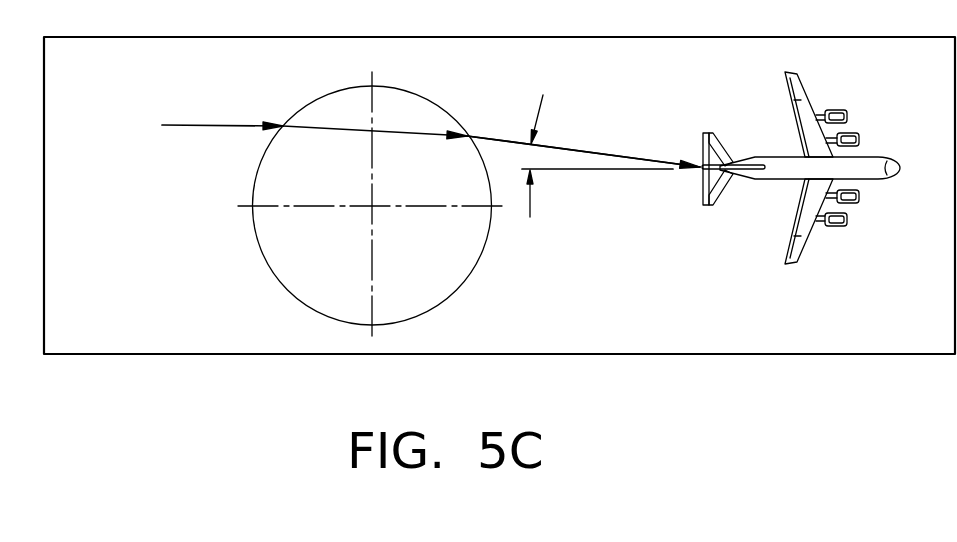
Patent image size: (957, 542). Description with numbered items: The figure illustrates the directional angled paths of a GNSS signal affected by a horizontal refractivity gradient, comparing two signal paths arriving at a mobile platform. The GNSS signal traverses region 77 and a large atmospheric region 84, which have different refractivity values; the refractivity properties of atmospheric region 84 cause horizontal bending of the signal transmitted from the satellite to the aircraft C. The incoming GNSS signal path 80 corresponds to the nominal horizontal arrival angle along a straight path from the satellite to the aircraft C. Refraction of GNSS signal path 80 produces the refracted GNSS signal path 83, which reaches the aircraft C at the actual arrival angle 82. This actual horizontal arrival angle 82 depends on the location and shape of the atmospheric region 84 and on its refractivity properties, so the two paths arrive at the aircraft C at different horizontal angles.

The region 77 is at (139, 308).
The GNSS signal path 80 is at (210, 125).
The actual arrival angle 82 is at (533, 205).
The GNSS signal path 83 is at (597, 152).
The atmospheric region 84 is at (335, 260).
The aircraft C is at (875, 182).